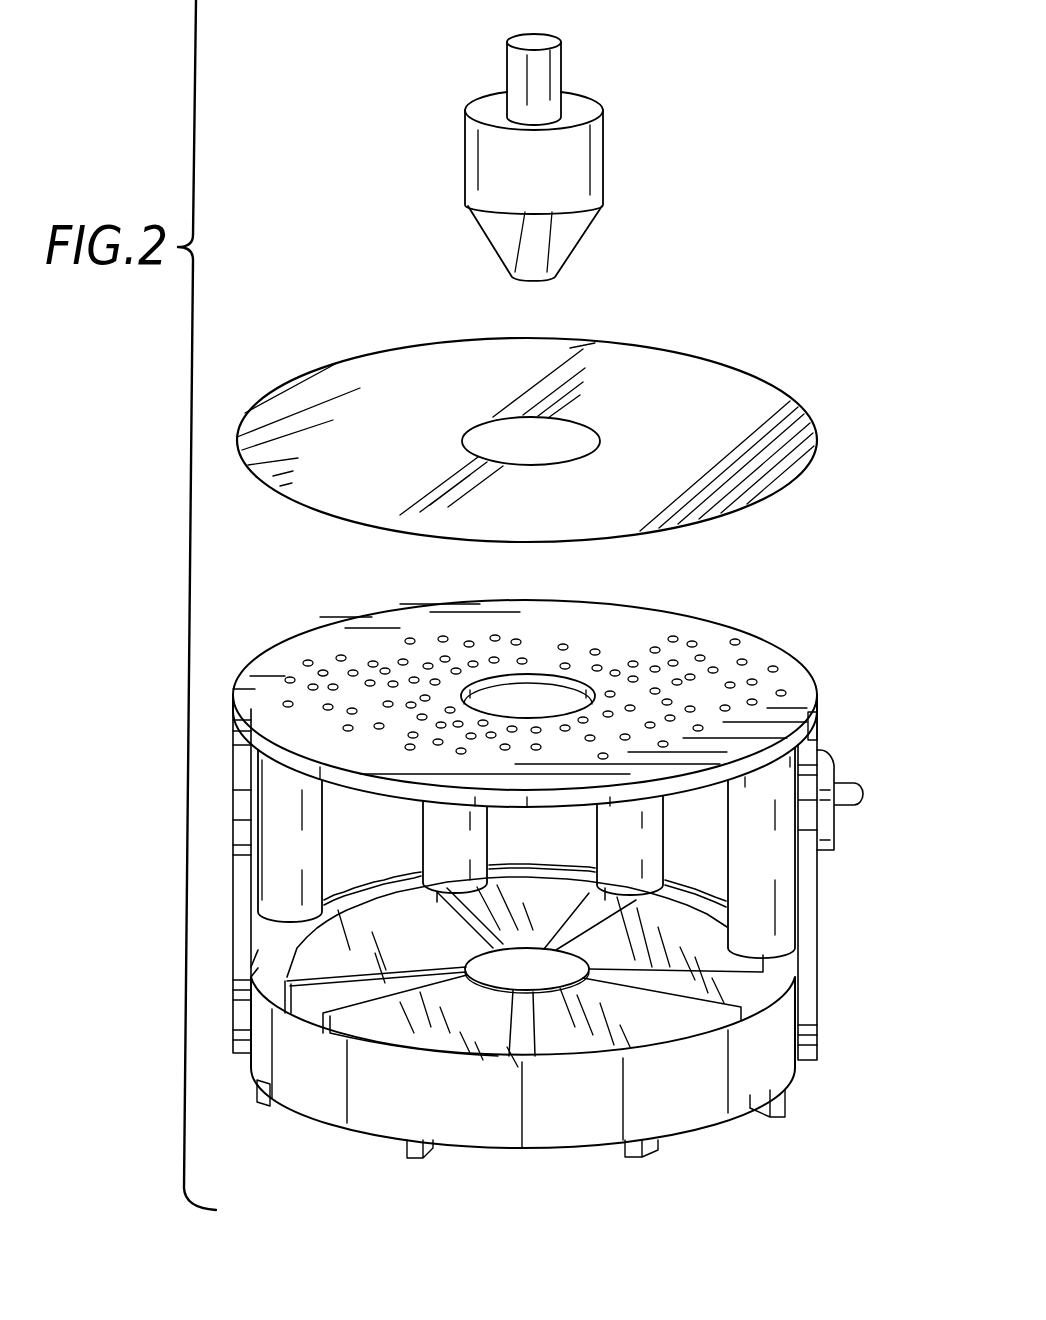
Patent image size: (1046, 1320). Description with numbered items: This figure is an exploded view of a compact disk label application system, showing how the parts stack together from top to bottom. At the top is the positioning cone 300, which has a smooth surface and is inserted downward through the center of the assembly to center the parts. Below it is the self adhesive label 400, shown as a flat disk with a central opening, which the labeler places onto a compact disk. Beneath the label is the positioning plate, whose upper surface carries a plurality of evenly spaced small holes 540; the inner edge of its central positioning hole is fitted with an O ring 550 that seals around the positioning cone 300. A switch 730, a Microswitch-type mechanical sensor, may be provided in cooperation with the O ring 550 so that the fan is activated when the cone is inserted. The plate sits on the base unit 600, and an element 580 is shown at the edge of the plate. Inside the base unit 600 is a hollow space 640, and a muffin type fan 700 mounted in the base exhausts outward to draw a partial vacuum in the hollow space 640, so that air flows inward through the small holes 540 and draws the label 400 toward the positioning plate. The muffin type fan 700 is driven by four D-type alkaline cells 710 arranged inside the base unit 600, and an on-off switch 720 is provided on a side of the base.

The positioning cone 300 is at (560, 180).
The self adhesive label 400 is at (708, 430).
The small holes 540 is at (753, 655).
The O ring 550 is at (593, 697).
The switch 730 is at (633, 660).
The base unit 600 is at (232, 792).
The rim tab 580 is at (810, 738).
The on-off switch 720 is at (828, 762).
The D-type alkaline cells 710 is at (320, 865).
The hollow space 640 is at (403, 848).
The muffin type fan 700 is at (690, 1100).